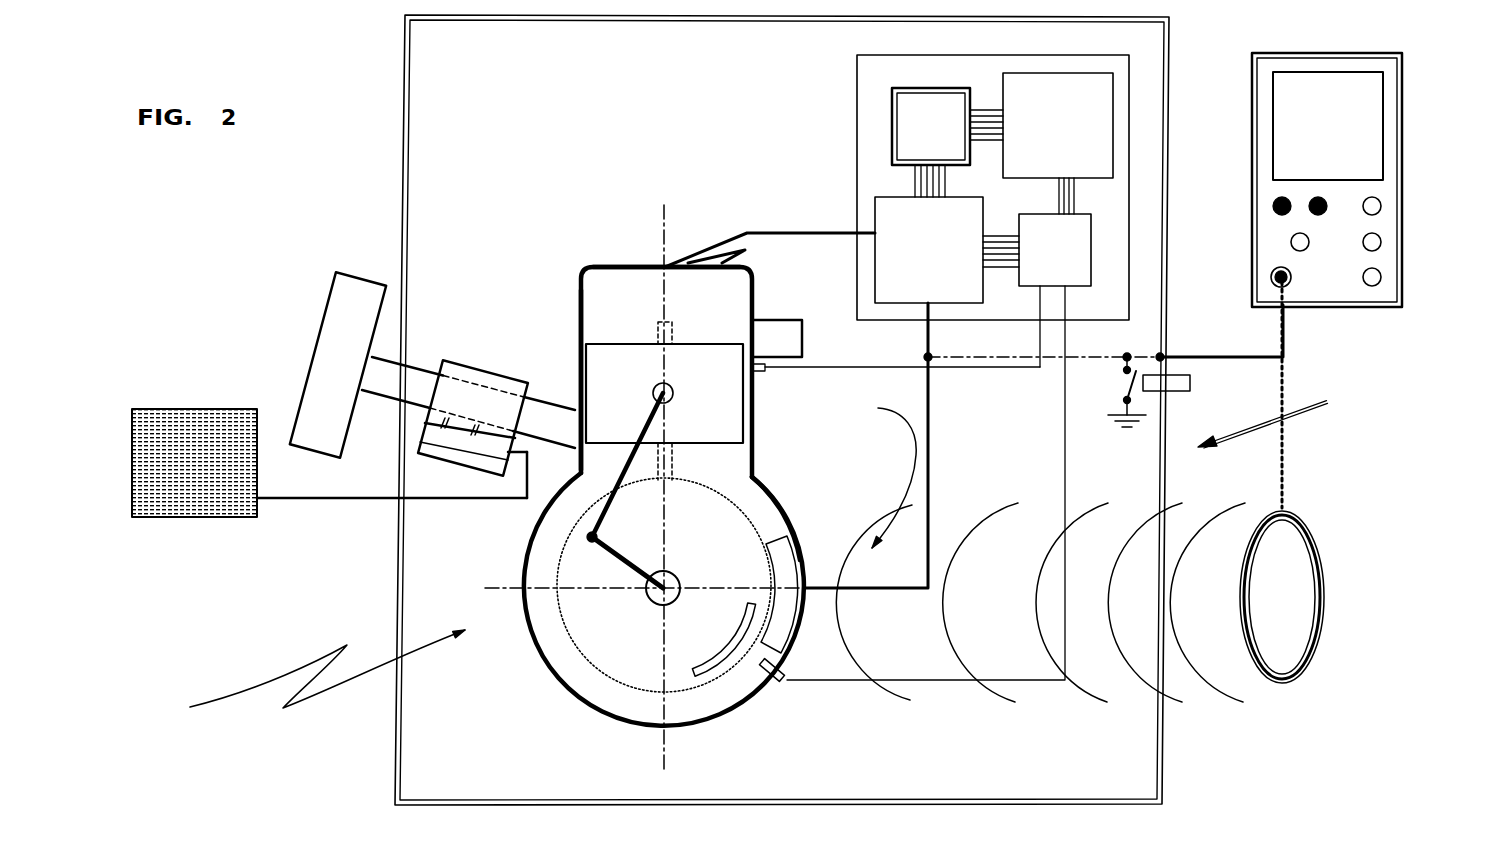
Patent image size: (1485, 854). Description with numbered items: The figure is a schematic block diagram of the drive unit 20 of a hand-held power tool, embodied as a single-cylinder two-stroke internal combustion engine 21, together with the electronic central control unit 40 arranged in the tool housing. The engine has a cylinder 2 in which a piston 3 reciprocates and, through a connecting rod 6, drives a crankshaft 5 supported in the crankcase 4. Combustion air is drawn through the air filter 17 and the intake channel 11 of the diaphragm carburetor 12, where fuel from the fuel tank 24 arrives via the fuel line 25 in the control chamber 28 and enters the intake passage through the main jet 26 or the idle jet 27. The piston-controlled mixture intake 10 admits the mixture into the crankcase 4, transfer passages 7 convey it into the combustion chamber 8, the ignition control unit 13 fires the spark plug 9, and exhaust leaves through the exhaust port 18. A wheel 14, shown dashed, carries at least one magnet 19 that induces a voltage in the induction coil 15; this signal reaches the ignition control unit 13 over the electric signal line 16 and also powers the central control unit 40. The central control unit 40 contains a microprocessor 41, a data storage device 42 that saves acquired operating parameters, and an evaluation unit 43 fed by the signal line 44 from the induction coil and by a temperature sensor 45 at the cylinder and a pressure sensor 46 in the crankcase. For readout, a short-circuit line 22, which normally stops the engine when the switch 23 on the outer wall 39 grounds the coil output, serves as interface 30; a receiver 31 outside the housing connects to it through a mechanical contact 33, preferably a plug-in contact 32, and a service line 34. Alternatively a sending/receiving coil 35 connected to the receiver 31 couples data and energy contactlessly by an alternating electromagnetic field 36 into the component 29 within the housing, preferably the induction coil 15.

The cylinder 2 is at (630, 265).
The piston 3 is at (708, 390).
The crankcase 4 is at (580, 677).
The crankshaft 5 is at (658, 591).
The connecting rod 6 is at (617, 483).
The transfer passages 7 is at (672, 468).
The combustion chamber 8 is at (725, 307).
The spark plug 9 is at (702, 252).
The mixture intake 10 is at (578, 417).
The intake channel 11 is at (412, 372).
The carburetor 12 is at (500, 373).
The ignition control unit 13 is at (941, 262).
The wheel 14 is at (645, 673).
The induction coil 15 is at (783, 552).
The electric signal line 16 is at (887, 593).
The air filter 17 is at (328, 338).
The exhaust port 18 is at (798, 318).
The magnet 19 is at (728, 653).
The drive unit 20 is at (311, 678).
The internal combustion engine 21 is at (762, 485).
The short-circuit line 22 is at (1048, 360).
The short-circuit switch 23 is at (1165, 382).
The fuel tank 24 is at (205, 430).
The fuel line 25 is at (315, 500).
The main jet 26 is at (440, 425).
The idle jet 27 is at (470, 433).
The control chamber 28 is at (483, 445).
The component 29 is at (1013, 372).
The interface 30 is at (1283, 395).
The receiver 31 is at (1387, 187).
The plug-in contact 32 is at (1172, 340).
The mechanical contact 33 is at (1170, 353).
The service line 34 is at (1285, 330).
The sending/receiving coil 35 is at (1293, 550).
The alternating electromagnetic field 36 is at (1160, 688).
The outer wall 39 is at (1168, 368).
The central control unit 40 is at (873, 135).
The microprocessor 41 is at (945, 140).
The data storage device 42 is at (1071, 138).
The evaluation unit 43 is at (1068, 262).
The signal line 44 is at (1010, 267).
The temperature sensor 45 is at (757, 372).
The pressure sensor 46 is at (782, 670).